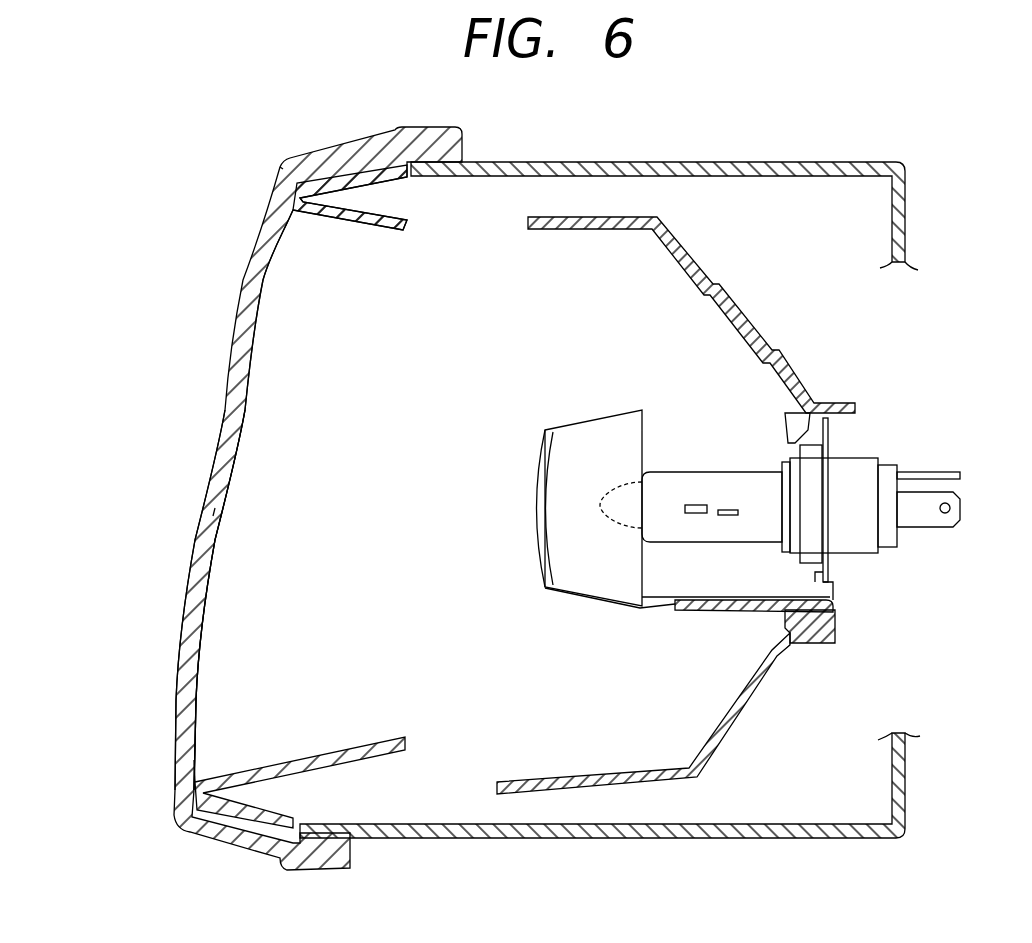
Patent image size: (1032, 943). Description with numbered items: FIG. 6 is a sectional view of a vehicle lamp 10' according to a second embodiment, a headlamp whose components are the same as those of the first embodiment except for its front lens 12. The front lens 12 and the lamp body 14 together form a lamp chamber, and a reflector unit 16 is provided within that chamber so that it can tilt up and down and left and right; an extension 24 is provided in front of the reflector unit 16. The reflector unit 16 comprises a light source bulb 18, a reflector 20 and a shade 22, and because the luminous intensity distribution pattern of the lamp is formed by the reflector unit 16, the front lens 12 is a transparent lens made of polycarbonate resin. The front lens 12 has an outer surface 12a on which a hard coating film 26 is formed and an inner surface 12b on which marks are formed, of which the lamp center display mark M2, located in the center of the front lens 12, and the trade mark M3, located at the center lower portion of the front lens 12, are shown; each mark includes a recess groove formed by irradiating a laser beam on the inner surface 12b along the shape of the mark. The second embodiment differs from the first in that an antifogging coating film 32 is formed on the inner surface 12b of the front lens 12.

The vehicle lamp 10' is at (180, 169).
The front lens 12 is at (273, 498).
The outer surface 12a is at (222, 415).
The inner surface 12b is at (245, 420).
The lamp body 14 is at (908, 215).
The reflector unit 16 is at (674, 492).
The light source bulb 18 is at (708, 470).
The reflector 20 is at (770, 332).
The shade 22 is at (535, 467).
The extension 24 is at (355, 745).
The hard coating film 26 is at (190, 588).
The antifogging coating film 32 is at (208, 608).
The lamp center display mark M2 is at (224, 511).
The trade mark M3 is at (196, 760).